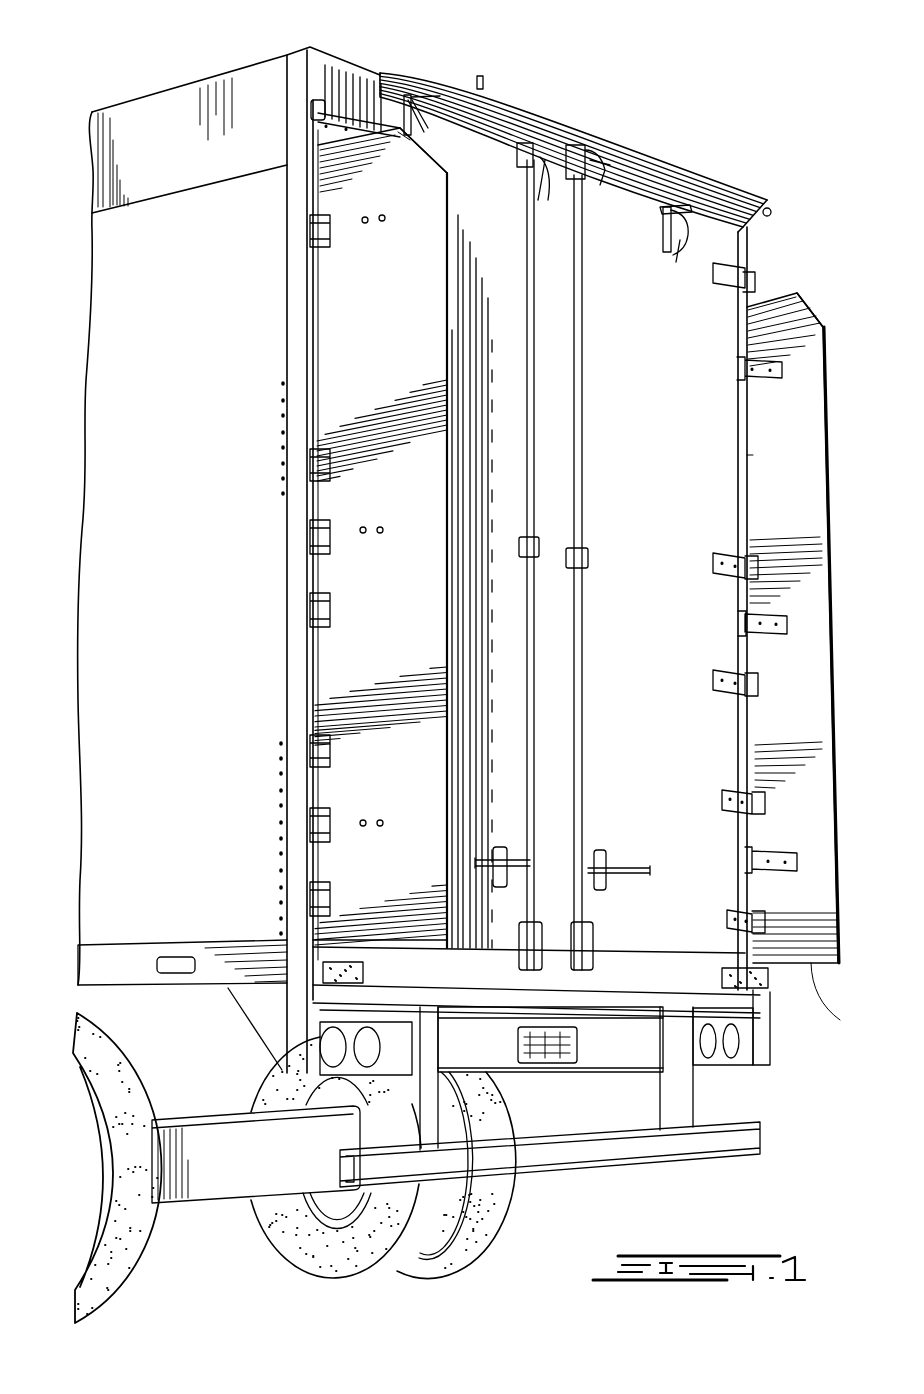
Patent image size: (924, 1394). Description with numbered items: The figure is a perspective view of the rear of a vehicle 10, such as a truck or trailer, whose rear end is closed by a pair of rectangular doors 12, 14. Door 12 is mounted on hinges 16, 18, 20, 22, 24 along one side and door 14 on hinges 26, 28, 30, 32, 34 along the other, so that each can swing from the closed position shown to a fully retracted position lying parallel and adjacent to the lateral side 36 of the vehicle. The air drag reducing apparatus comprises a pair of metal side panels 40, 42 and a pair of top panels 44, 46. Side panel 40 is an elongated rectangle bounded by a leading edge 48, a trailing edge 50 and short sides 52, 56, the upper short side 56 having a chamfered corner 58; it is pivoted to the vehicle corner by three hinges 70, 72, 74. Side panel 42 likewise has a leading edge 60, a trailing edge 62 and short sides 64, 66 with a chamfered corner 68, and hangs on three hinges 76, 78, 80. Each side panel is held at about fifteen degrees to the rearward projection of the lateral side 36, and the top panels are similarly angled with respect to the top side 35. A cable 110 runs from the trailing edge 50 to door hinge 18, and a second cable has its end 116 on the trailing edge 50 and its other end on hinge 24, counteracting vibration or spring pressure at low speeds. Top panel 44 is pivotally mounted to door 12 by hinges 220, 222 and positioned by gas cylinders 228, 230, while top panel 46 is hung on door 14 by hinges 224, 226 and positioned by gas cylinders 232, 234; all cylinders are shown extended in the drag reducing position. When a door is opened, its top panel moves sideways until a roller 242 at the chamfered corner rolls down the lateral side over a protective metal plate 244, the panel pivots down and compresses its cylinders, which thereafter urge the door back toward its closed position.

The vehicle 10 is at (60, 662).
The door 12 is at (510, 394).
The door 14 is at (705, 440).
The hinge 16 is at (318, 112).
The hinge 18 is at (318, 463).
The hinge 20 is at (318, 606).
The hinge 22 is at (313, 752).
The hinge 24 is at (313, 905).
The hinge 26 is at (752, 280).
The hinge 28 is at (743, 570).
The hinge 30 is at (738, 694).
The hinge 32 is at (747, 797).
The hinge 34 is at (727, 920).
The top side of the vehicle 35 is at (134, 100).
The lateral side of the vehicle 36 is at (128, 385).
The side panel 40 is at (360, 331).
The side panel 42 is at (790, 481).
The top panel 44 is at (497, 82).
The top panel 46 is at (707, 177).
The leading edge 48 is at (316, 672).
The trailing edge 50 is at (450, 470).
The side 52 is at (428, 948).
The upper short side 56 is at (362, 72).
The chamfered corner 58 is at (436, 150).
The leading edge 60 is at (750, 456).
The trailing edge 62 is at (829, 506).
The short side 64 is at (838, 1020).
The upper horizontal short side 66 is at (781, 293).
The chamfered corner 68 is at (824, 316).
The hinge 70 is at (312, 232).
The hinge 72 is at (318, 540).
The hinge 74 is at (313, 830).
The hinge 76 is at (740, 368).
The hinge 78 is at (745, 622).
The hinge 80 is at (750, 858).
The cable 110 is at (773, 553).
The cable end 116 is at (807, 910).
The hinge 220 is at (396, 134).
The hinge 222 is at (516, 163).
The hinge 224 is at (664, 248).
The hinge 226 is at (677, 270).
The gas cylinder 228 is at (407, 90).
The gas cylinder 230 is at (543, 198).
The gas cylinder 232 is at (632, 148).
The gas cylinder 234 is at (680, 224).
The roller 242 is at (770, 208).
The plate 244 is at (137, 170).